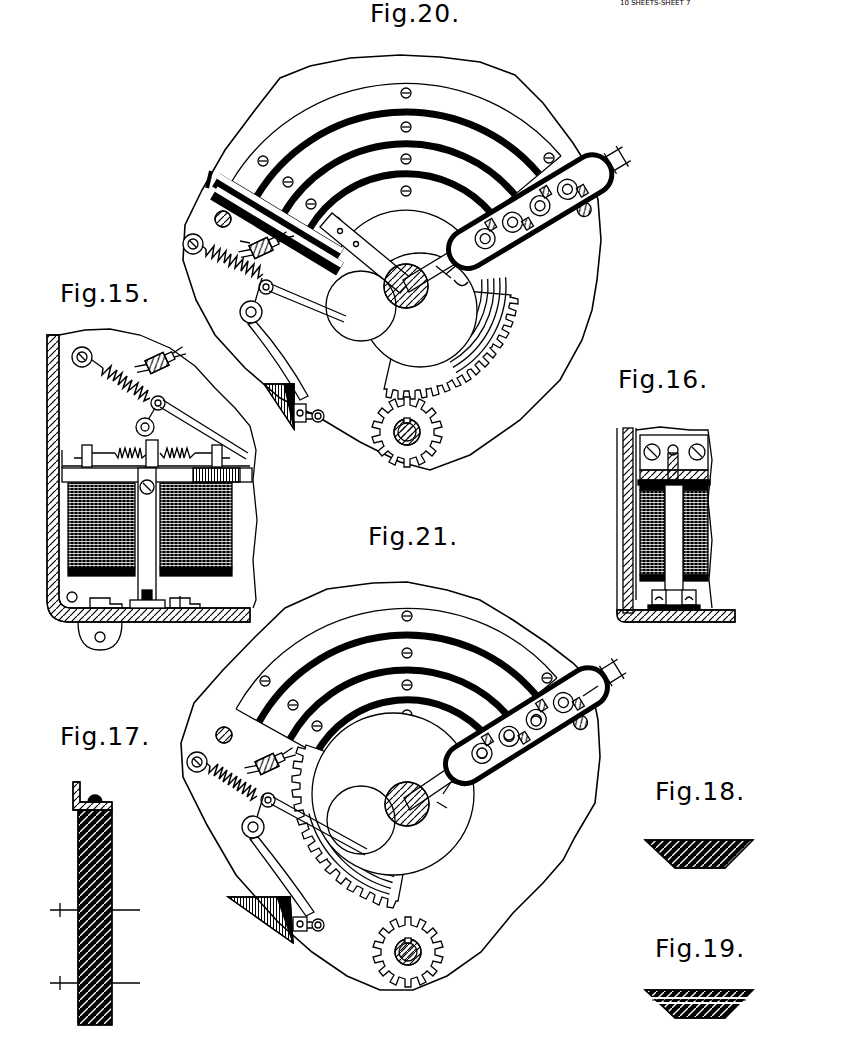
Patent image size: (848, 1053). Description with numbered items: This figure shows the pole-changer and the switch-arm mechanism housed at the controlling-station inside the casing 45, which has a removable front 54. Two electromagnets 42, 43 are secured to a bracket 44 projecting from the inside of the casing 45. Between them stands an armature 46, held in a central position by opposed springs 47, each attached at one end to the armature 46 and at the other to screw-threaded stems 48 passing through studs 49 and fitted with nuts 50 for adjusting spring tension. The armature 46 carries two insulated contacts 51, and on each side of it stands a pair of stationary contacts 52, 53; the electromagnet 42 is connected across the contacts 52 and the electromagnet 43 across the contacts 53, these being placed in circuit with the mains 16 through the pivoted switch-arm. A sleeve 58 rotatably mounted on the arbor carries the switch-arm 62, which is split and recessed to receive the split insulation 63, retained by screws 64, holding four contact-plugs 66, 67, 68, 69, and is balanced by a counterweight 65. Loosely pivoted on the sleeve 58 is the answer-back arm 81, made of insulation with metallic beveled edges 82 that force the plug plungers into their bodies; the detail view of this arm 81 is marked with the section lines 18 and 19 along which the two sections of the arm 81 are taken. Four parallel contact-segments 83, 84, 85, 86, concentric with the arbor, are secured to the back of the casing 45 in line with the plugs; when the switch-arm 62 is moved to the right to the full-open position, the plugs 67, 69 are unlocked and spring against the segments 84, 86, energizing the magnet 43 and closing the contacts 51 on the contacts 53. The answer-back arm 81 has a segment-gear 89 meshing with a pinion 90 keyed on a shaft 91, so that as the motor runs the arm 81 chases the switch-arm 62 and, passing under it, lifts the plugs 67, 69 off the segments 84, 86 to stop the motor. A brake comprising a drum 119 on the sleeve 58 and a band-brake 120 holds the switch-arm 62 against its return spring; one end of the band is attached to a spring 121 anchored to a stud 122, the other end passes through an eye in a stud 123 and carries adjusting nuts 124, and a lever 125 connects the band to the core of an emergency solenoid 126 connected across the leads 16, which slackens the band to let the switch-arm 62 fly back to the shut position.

In FIG. 15, the mains 16 is at (200, 655).
In FIG. 17, the section line 18 is at (92, 911).
In FIG. 17, the section line 19 is at (92, 984).
In FIG. 15, the electromagnet 42 is at (75, 500).
In FIG. 16, the electromagnet 42 is at (712, 522).
In FIG. 15, the electromagnet 43 is at (225, 520).
In FIG. 15, the bracket 44 is at (240, 472).
In FIG. 16, the bracket 44 is at (712, 468).
In FIG. 15, the casing 45 is at (50, 553).
In FIG. 16, the casing 45 is at (728, 623).
In FIG. 15, the armature 46 is at (190, 580).
In FIG. 16, the armature 46 is at (690, 541).
In FIG. 15, the springs 47 is at (135, 450).
In FIG. 15, the screw-threaded stems 48 is at (85, 447).
In FIG. 15, the studs 49 is at (98, 448).
In FIG. 15, the nuts 50 is at (88, 446).
In FIG. 15, the insulated contacts 51 is at (142, 612).
In FIG. 15, the stationary contacts 52 is at (120, 600).
In FIG. 16, the stationary contacts 52 is at (700, 597).
In FIG. 15, the stationary contacts 53 is at (180, 610).
In FIG. 16, the removable front 54 is at (617, 541).
In FIG. 20, the sleeve 58 is at (394, 286).
In FIG. 21, the sleeve 58 is at (393, 793).
In FIG. 20, the switch-arm 62 is at (445, 258).
In FIG. 21, the switch-arm 62 is at (444, 777).
In FIG. 20, the split insulation 63 is at (552, 210).
In FIG. 21, the split insulation 63 is at (549, 723).
In FIG. 20, the screws 64 is at (534, 205).
In FIG. 20, the counterweight 65 is at (361, 306).
In FIG. 21, the counterweight 65 is at (361, 820).
In FIG. 21, the contact-plug 66 is at (615, 703).
In FIG. 21, the contact-plug 67 is at (551, 745).
In FIG. 21, the contact-plug 68 is at (515, 762).
In FIG. 21, the contact-plug 69 is at (490, 781).
In FIG. 20, the answer-back arm 81 is at (366, 253).
In FIG. 21, the answer-back arm 81 is at (455, 799).
In FIG. 17, the answer-back arm 81 is at (112, 866).
In FIG. 18, the answer-back arm 81 is at (740, 854).
In FIG. 19, the answer-back arm 81 is at (698, 1020).
In FIG. 20, the metallic beveled edges 82 is at (274, 199).
In FIG. 19, the metallic beveled edges 82 is at (656, 996).
In FIG. 20, the contact-segment 83 is at (396, 165).
In FIG. 21, the contact-segment 83 is at (396, 686).
In FIG. 20, the contact-segment 84 is at (398, 154).
In FIG. 21, the contact-segment 84 is at (397, 678).
In FIG. 20, the contact-segment 85 is at (399, 178).
In FIG. 21, the contact-segment 85 is at (400, 704).
In FIG. 20, the contact-segment 86 is at (401, 210).
In FIG. 21, the contact-segment 86 is at (401, 734).
In FIG. 20, the segment-gear 89 is at (462, 338).
In FIG. 21, the segment-gear 89 is at (368, 826).
In FIG. 20, the pinion 90 is at (423, 432).
In FIG. 21, the pinion 90 is at (422, 952).
In FIG. 20, the shaft 91 is at (380, 439).
In FIG. 21, the shaft 91 is at (434, 956).
In FIG. 20, the drum 119 is at (420, 310).
In FIG. 21, the drum 119 is at (393, 794).
In FIG. 20, the band-brake 120 is at (305, 310).
In FIG. 21, the band-brake 120 is at (314, 823).
In FIG. 15, the band-brake 120 is at (178, 418).
In FIG. 20, the spring 121 is at (232, 270).
In FIG. 21, the spring 121 is at (228, 789).
In FIG. 15, the spring 121 is at (121, 374).
In FIG. 20, the stud 122 is at (158, 241).
In FIG. 21, the stud 122 is at (173, 764).
In FIG. 15, the stud 122 is at (90, 350).
In FIG. 20, the stud 123 is at (264, 238).
In FIG. 21, the stud 123 is at (272, 755).
In FIG. 15, the stud 123 is at (162, 356).
In FIG. 20, the nuts 124 is at (270, 246).
In FIG. 20, the lever 125 is at (274, 339).
In FIG. 21, the lever 125 is at (278, 855).
In FIG. 20, the solenoid 126 is at (294, 406).
In FIG. 21, the solenoid 126 is at (268, 921).